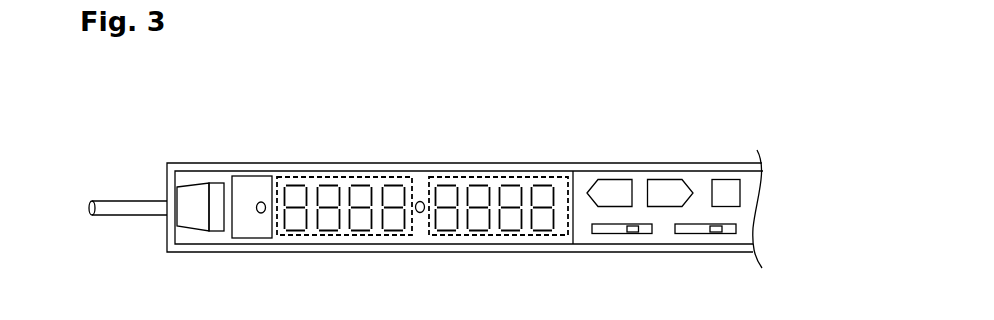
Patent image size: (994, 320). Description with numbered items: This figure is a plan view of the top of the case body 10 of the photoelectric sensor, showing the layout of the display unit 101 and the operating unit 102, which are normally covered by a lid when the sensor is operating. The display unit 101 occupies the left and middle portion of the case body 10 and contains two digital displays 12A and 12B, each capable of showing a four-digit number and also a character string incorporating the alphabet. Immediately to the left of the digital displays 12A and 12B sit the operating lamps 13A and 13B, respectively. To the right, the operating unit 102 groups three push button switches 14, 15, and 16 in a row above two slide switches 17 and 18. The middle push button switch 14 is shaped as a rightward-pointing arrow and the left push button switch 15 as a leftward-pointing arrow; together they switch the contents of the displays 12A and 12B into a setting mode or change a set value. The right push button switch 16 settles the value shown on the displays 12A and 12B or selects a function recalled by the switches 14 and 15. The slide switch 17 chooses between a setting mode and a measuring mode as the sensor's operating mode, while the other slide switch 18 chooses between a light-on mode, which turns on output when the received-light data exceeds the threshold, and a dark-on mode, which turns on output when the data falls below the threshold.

The case body 10 is at (222, 163).
The digital display 12A is at (347, 173).
The digital display 12B is at (498, 172).
The operating lamp 13A is at (261, 213).
The operating lamp 13B is at (420, 212).
The push button switch 14 is at (667, 186).
The push button switch 15 is at (614, 186).
The push button switch 16 is at (727, 185).
The slide switch 17 is at (631, 232).
The slide switch 18 is at (714, 232).
The display unit 101 is at (421, 171).
The operating unit 102 is at (690, 164).